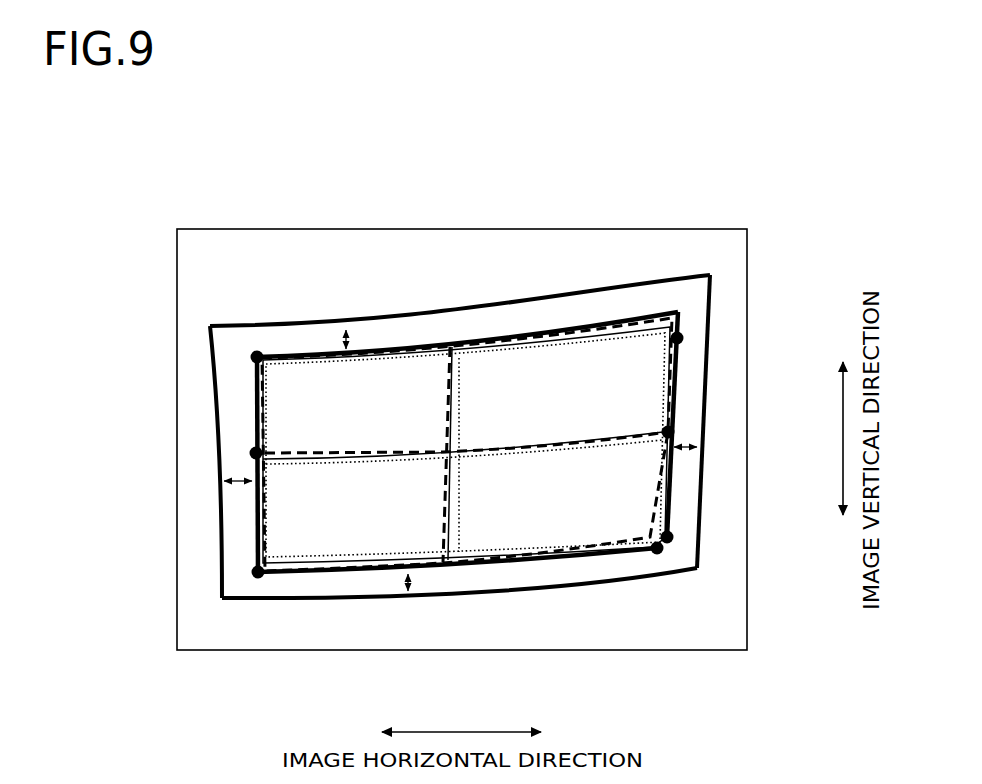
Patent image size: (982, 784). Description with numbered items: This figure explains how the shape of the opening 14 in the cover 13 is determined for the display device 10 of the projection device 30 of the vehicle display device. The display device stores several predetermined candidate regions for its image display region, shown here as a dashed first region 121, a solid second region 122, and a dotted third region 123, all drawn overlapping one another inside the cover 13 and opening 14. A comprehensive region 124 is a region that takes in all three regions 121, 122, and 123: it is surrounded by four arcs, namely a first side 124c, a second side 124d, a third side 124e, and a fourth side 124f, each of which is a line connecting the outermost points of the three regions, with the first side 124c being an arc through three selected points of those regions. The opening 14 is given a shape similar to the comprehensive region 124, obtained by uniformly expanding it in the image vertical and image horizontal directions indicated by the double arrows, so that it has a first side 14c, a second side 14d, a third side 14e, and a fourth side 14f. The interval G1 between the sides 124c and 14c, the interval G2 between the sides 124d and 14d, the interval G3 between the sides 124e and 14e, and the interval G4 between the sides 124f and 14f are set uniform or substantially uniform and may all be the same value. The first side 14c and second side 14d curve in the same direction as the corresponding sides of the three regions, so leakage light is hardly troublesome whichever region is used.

The projection device 30 is at (311, 138).
The display device 10 is at (275, 219).
The cover 13 is at (371, 260).
The opening 14 is at (460, 426).
The first side 14c is at (451, 316).
The second side 14d is at (462, 591).
The third side 14e is at (224, 524).
The fourth side 14f is at (699, 474).
The first region 121 is at (662, 307).
The second region 122 is at (613, 340).
The third region 123 is at (642, 340).
The comprehensive region 124 is at (461, 426).
The first side 124c is at (418, 345).
The second side 124d is at (541, 558).
The third side 124e is at (254, 420).
The fourth side 124f is at (673, 389).
The interval G1 is at (345, 325).
The interval G2 is at (418, 590).
The interval G3 is at (239, 478).
The interval G4 is at (690, 445).